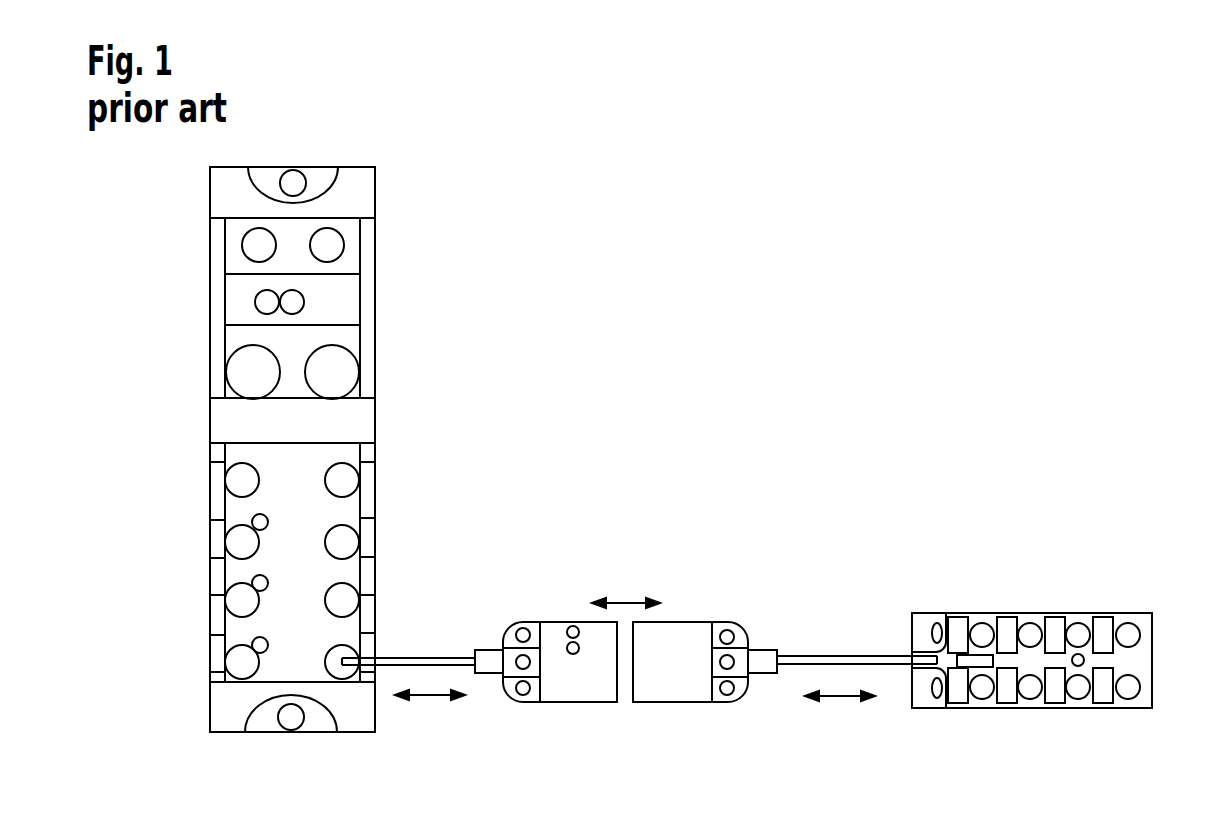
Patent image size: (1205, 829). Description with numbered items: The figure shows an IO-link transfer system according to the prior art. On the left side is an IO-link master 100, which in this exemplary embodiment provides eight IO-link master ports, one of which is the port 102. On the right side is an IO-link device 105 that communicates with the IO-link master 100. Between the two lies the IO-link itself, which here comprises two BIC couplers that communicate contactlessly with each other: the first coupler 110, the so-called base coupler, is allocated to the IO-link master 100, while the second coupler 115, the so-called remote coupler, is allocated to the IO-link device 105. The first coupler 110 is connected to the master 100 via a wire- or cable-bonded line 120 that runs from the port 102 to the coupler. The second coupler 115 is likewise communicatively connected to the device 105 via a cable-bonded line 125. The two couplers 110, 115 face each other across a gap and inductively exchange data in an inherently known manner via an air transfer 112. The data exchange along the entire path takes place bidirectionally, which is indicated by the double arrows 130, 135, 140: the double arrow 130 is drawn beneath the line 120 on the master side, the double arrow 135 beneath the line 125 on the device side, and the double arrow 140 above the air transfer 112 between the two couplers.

The IO-link master 100 is at (282, 570).
The port 102 is at (348, 477).
The IO-link device 105 is at (1017, 657).
The first coupler 110 is at (555, 637).
The air transfer 112 is at (623, 673).
The second coupler 115 is at (695, 637).
The wire- or cable-bonded line 120 is at (423, 657).
The cable-bonded line 125 is at (852, 655).
The double arrow 130 is at (433, 699).
The double arrow 135 is at (847, 699).
The double arrow 140 is at (627, 601).